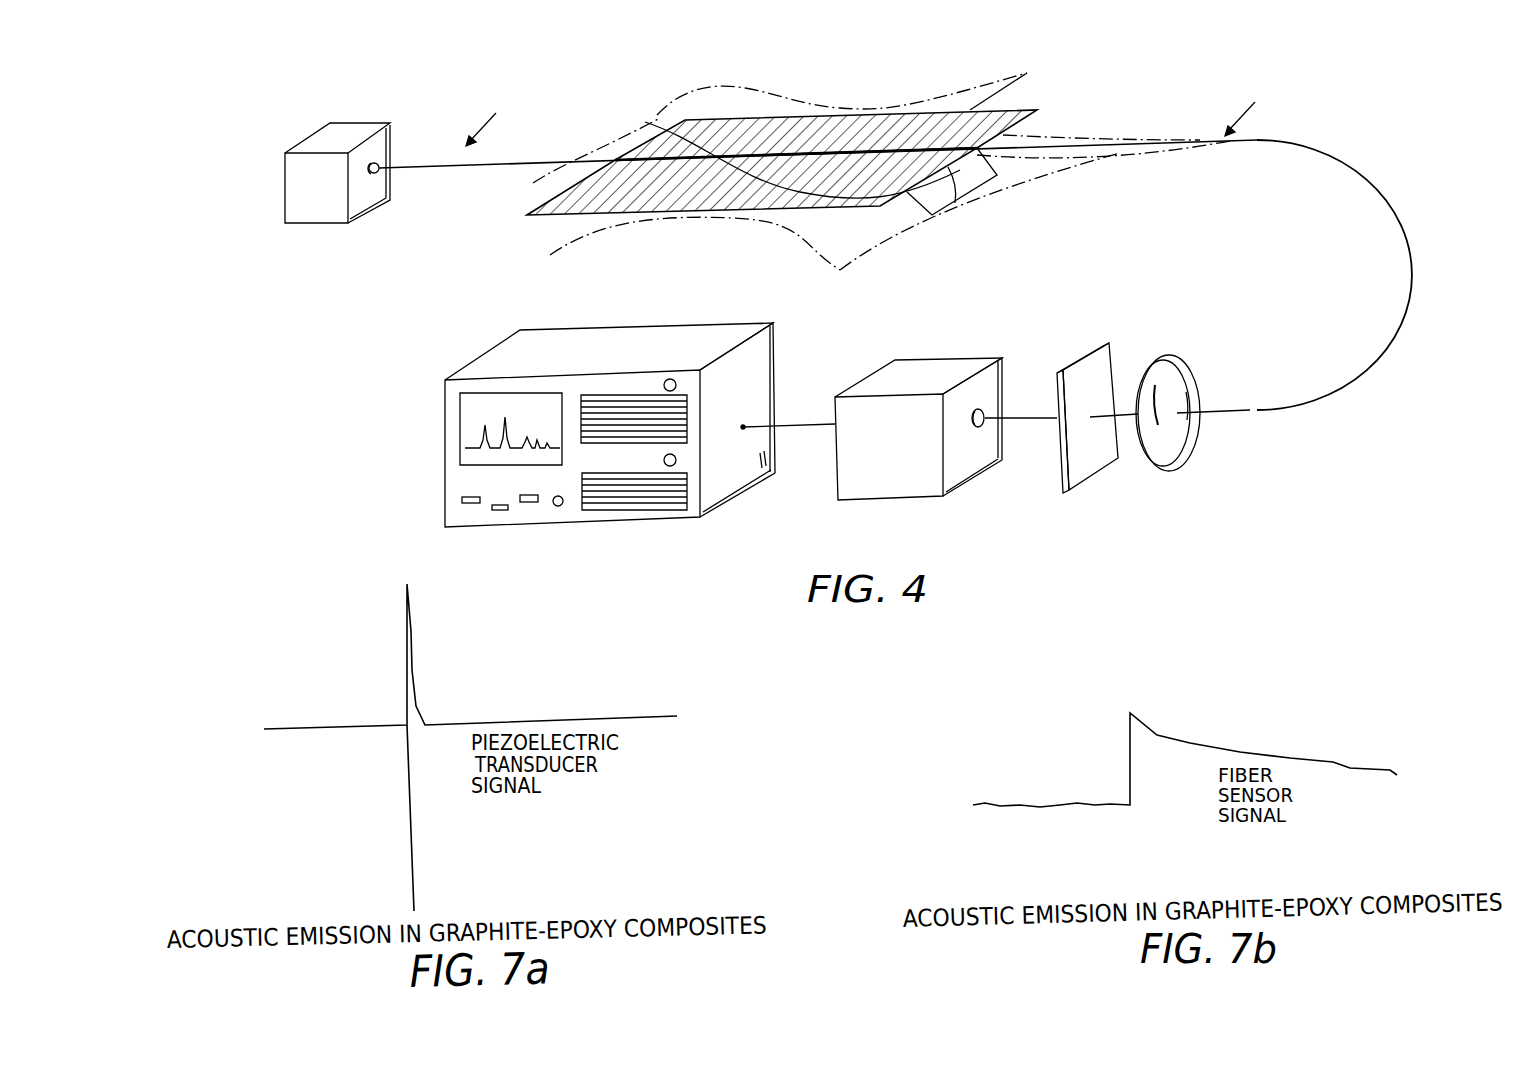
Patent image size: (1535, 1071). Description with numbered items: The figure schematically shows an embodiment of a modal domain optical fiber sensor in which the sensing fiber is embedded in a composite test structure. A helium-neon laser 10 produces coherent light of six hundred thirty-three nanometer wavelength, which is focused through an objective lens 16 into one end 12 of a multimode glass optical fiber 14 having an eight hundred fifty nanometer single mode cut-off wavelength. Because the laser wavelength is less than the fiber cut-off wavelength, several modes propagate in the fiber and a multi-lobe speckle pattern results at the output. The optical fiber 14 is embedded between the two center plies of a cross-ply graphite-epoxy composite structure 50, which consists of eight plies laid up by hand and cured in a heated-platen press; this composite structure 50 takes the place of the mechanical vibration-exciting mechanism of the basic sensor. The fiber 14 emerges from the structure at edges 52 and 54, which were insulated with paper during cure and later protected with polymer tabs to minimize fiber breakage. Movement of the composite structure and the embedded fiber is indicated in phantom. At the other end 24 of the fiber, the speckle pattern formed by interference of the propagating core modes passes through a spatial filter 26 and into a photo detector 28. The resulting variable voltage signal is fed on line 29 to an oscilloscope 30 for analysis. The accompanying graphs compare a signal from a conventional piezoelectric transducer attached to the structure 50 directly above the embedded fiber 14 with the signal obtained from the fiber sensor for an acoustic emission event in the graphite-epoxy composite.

The laser 10 is at (357, 132).
The end of optical fiber 12 is at (375, 176).
The optical fiber 14 is at (483, 160).
The objective lens 16 is at (379, 162).
The other end of optical fiber 24 is at (1193, 385).
The spatial filter 26 is at (1107, 350).
The photo detector 28 is at (993, 372).
The line 29 is at (807, 423).
The oscilloscope 30 is at (763, 357).
The composite structure 50 is at (543, 214).
The edge of composite structure 52 is at (546, 203).
The edge of composite structure 54 is at (955, 205).